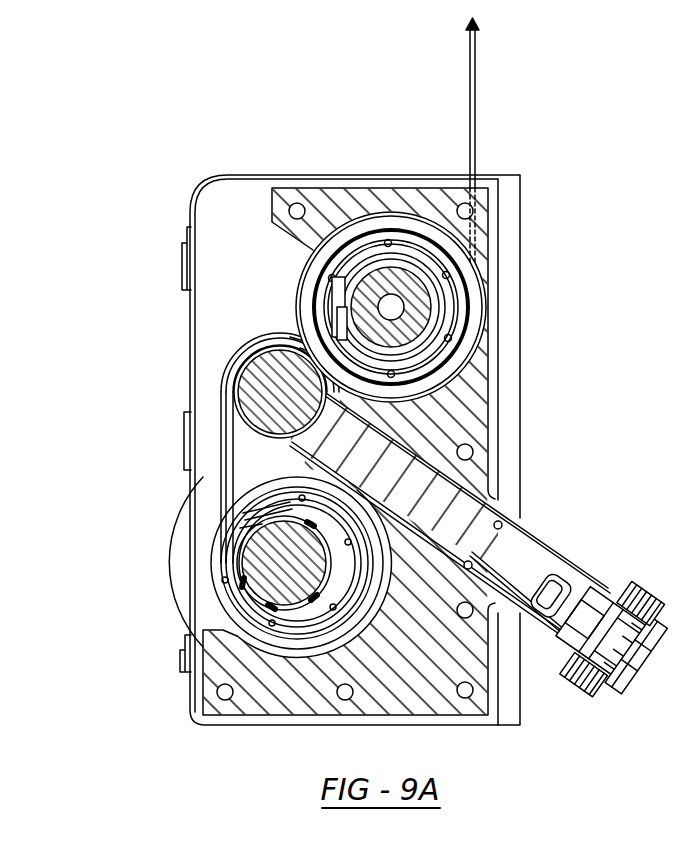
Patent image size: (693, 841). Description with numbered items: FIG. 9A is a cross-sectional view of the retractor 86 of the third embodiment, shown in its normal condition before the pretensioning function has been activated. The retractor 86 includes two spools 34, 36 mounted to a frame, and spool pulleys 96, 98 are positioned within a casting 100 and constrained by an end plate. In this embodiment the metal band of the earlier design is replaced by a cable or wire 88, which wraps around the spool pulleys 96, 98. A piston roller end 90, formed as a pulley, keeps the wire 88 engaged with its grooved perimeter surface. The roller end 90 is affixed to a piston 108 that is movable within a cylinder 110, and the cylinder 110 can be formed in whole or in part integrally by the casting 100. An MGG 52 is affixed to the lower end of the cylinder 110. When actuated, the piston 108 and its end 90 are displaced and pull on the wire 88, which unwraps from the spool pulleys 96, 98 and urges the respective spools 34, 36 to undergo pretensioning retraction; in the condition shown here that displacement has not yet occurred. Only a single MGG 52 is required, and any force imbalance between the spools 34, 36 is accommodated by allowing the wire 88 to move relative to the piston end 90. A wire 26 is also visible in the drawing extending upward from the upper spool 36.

The wire 26 is at (475, 100).
The spool pulley 98 is at (420, 270).
The retractor 86 is at (529, 277).
The spool 36 is at (356, 271).
The piston roller end 90 is at (272, 387).
The wire 88 is at (225, 454).
The spool pulley 96 is at (230, 550).
The spool 34 is at (245, 563).
The piston 108 is at (447, 500).
The cylinder 110 is at (527, 548).
The MGG 52 is at (590, 603).
The casting 100 is at (286, 727).